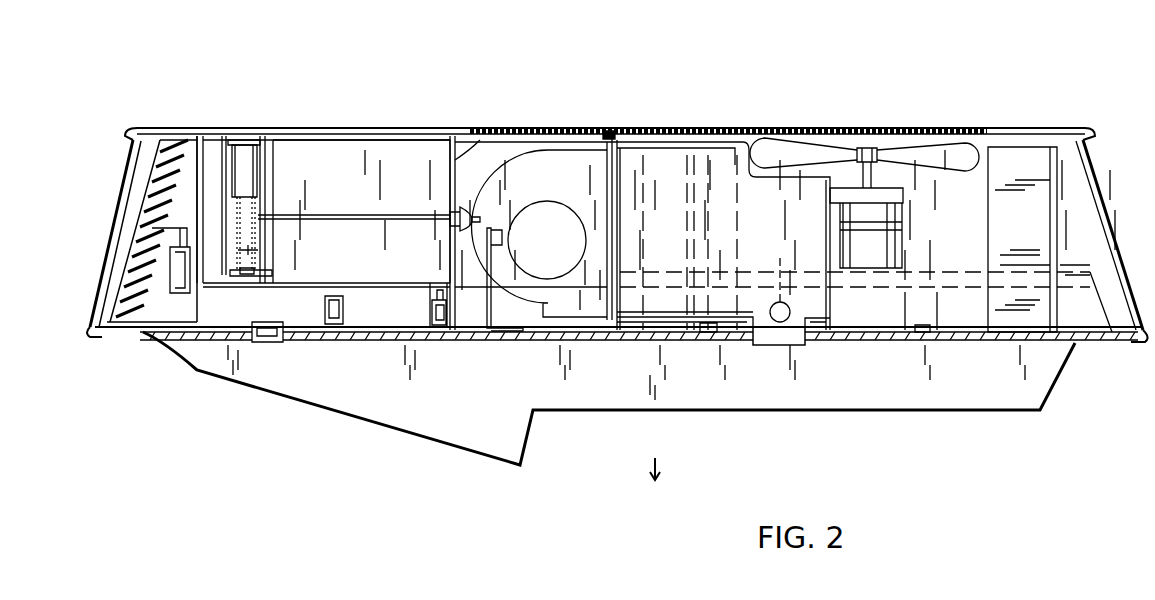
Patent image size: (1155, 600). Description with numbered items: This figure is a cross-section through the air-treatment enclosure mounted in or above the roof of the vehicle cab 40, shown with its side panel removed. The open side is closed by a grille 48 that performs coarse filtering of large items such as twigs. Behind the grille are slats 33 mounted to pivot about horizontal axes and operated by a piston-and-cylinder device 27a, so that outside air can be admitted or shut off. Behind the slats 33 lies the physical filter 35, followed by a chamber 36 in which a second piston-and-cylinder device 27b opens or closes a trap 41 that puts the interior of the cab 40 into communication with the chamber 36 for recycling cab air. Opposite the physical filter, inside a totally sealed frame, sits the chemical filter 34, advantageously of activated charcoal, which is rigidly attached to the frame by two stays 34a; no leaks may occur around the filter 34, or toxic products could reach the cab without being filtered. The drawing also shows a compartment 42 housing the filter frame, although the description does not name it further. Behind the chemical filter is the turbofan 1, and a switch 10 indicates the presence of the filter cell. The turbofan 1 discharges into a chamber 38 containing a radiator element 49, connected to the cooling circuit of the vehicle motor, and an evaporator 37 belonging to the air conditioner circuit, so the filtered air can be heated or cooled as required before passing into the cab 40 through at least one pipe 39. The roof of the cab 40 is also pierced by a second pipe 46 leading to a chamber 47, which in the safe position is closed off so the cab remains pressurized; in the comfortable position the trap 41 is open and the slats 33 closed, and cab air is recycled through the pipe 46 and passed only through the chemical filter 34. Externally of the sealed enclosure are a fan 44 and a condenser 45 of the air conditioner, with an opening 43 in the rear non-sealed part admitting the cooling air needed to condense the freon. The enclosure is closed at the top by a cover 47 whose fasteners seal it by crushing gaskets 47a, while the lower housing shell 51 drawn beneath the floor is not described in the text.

The turbofan 1 is at (537, 240).
The switch 10 is at (443, 315).
The piston-and-cylinder device 27a is at (126, 229).
The second piston-and-cylinder device 27b is at (246, 160).
The slats 33 is at (168, 147).
The chemical filter 34 is at (470, 150).
The stays 34a is at (398, 215).
The physical filter 35 is at (211, 145).
The chamber 36 is at (266, 210).
The evaporator 37 is at (678, 165).
The chamber 38 is at (662, 160).
The pipe 39 is at (782, 330).
The cab 40 is at (660, 451).
The trap 41 is at (265, 259).
The compartment 42 is at (367, 140).
The opening 43 is at (873, 130).
The fan 44 is at (945, 155).
The condenser 45 is at (1022, 180).
The second pipe 46 is at (263, 342).
The cover 47 is at (573, 128).
The gaskets 47a is at (612, 134).
The grille 48 is at (128, 175).
The radiator element 49 is at (722, 170).
The bottom housing 51 is at (528, 430).